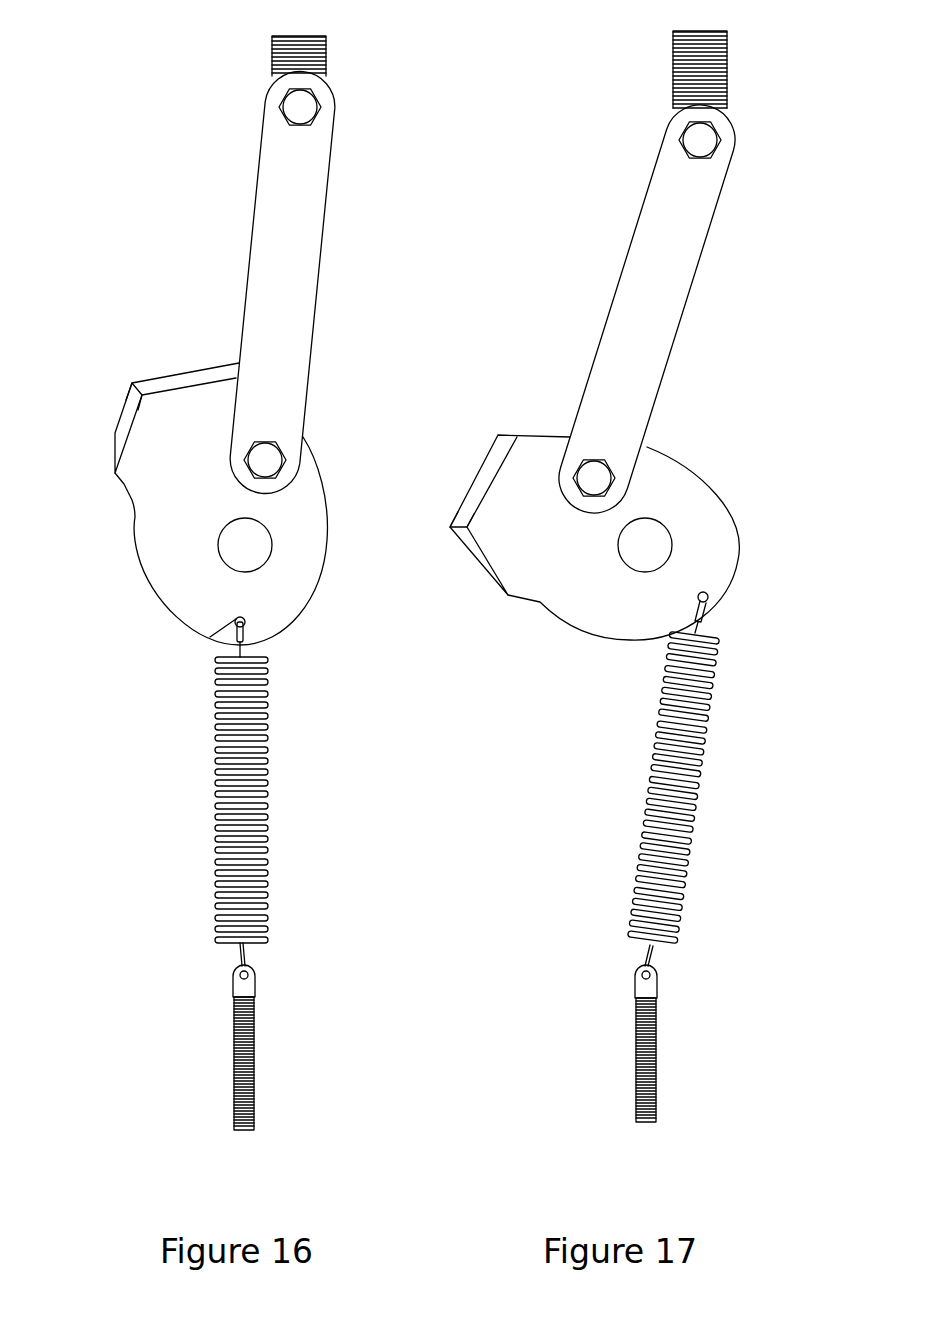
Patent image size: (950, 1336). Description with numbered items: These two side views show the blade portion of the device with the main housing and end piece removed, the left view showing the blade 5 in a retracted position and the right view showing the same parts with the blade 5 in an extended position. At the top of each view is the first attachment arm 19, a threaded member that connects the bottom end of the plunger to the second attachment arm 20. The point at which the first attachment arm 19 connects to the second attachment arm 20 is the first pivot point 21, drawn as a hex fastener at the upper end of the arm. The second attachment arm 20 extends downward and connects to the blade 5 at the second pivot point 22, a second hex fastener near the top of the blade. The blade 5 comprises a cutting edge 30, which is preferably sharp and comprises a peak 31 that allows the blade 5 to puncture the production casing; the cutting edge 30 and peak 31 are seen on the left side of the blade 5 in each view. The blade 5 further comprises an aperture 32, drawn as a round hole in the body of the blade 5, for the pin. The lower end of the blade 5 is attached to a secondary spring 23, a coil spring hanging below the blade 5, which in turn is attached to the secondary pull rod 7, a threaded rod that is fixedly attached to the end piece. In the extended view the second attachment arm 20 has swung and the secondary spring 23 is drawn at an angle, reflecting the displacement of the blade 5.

In FIG. 16, the blade 5 is at (168, 437).
In FIG. 17, the blade 5 is at (577, 597).
In FIG. 16, the secondary pull rod 7 is at (232, 1085).
In FIG. 17, the secondary pull rod 7 is at (658, 1065).
In FIG. 16, the first attachment arm 19 is at (273, 41).
In FIG. 17, the first attachment arm 19 is at (728, 62).
In FIG. 16, the second attachment arm 20 is at (285, 245).
In FIG. 17, the second attachment arm 20 is at (640, 297).
In FIG. 16, the first pivot point 21 is at (291, 107).
In FIG. 17, the first pivot point 21 is at (703, 140).
In FIG. 16, the second pivot point 22 is at (267, 459).
In FIG. 17, the second pivot point 22 is at (597, 478).
In FIG. 16, the secondary spring 23 is at (218, 832).
In FIG. 17, the secondary spring 23 is at (700, 780).
In FIG. 16, the cutting edge 30 is at (188, 378).
In FIG. 17, the cutting edge 30 is at (480, 492).
In FIG. 16, the peak 31 is at (132, 383).
In FIG. 17, the peak 31 is at (450, 527).
In FIG. 16, the aperture 32 is at (233, 550).
In FIG. 17, the aperture 32 is at (655, 548).